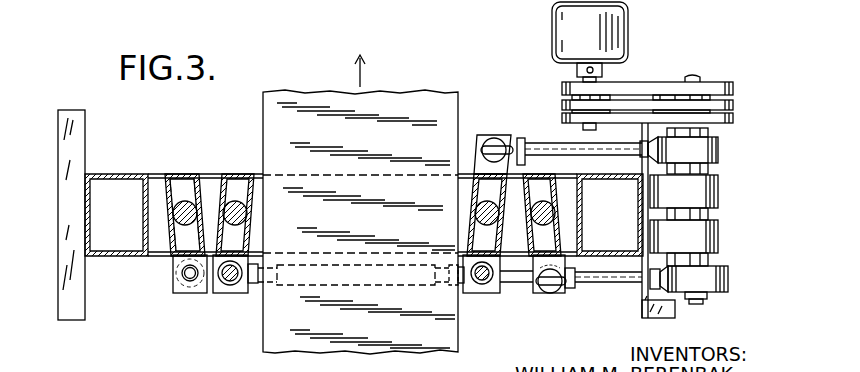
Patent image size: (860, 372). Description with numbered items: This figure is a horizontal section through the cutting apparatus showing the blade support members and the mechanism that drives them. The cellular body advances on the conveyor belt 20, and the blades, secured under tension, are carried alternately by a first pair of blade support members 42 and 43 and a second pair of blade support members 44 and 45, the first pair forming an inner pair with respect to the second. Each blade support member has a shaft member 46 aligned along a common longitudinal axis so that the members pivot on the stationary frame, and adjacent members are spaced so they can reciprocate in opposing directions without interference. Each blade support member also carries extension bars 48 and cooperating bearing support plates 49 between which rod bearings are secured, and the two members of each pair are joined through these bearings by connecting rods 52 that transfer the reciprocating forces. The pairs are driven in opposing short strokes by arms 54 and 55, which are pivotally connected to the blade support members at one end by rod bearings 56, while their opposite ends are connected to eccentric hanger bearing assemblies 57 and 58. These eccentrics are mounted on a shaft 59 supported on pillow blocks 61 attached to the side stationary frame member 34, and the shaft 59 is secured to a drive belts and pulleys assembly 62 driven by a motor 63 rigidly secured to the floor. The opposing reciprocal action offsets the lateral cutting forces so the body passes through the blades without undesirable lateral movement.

The conveyor belt 20 is at (310, 100).
The side stationary frame member 34 is at (124, 257).
The blade support member 42 is at (234, 174).
The blade support member 43 is at (477, 190).
The blade support member 44 is at (180, 174).
The blade support member 45 is at (536, 172).
The shaft member 46 is at (173, 213).
The extension bar 48 is at (192, 291).
The bearing support plate 49 is at (240, 291).
The connecting rod 52 is at (297, 286).
The arm 54 is at (600, 152).
The arm 55 is at (633, 284).
The rod bearing 56 is at (494, 142).
The eccentric hanger bearing assembly 57 is at (718, 150).
The eccentric hanger bearing assembly 58 is at (727, 283).
The shaft 59 is at (690, 262).
The pillow block 61 is at (713, 190).
The drive belts and pulleys assembly 62 is at (668, 82).
The motor 63 is at (556, 36).